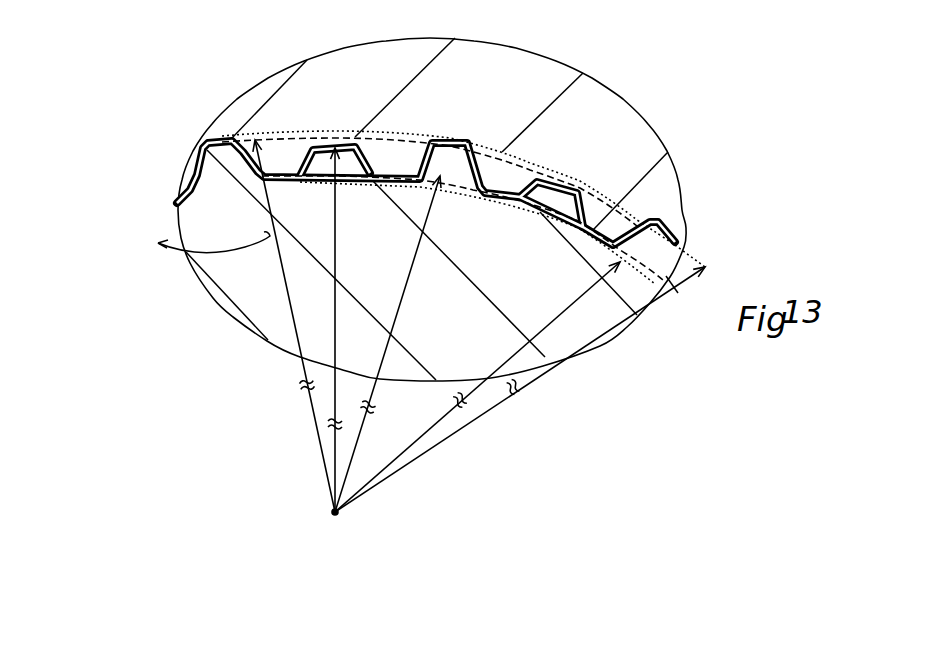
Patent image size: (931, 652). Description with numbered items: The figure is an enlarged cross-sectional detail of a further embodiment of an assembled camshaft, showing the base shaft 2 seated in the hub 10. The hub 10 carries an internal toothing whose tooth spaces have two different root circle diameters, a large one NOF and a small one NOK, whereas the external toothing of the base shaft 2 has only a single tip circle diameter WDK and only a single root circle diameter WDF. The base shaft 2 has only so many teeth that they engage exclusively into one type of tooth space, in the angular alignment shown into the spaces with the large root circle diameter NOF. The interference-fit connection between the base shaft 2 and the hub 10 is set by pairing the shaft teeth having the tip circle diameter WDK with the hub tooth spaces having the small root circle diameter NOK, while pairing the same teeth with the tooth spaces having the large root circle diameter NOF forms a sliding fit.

The base shaft 2 is at (228, 276).
The hub 10 is at (612, 110).
The root circle diameter of the hub internal toothing NOF is at (303, 360).
The root circle diameter of the hub internal toothing NOK is at (353, 438).
The root circle diameter of the base shaft external toothing WDF is at (445, 417).
The tip circle diameter of the base shaft external toothing WDK is at (540, 382).